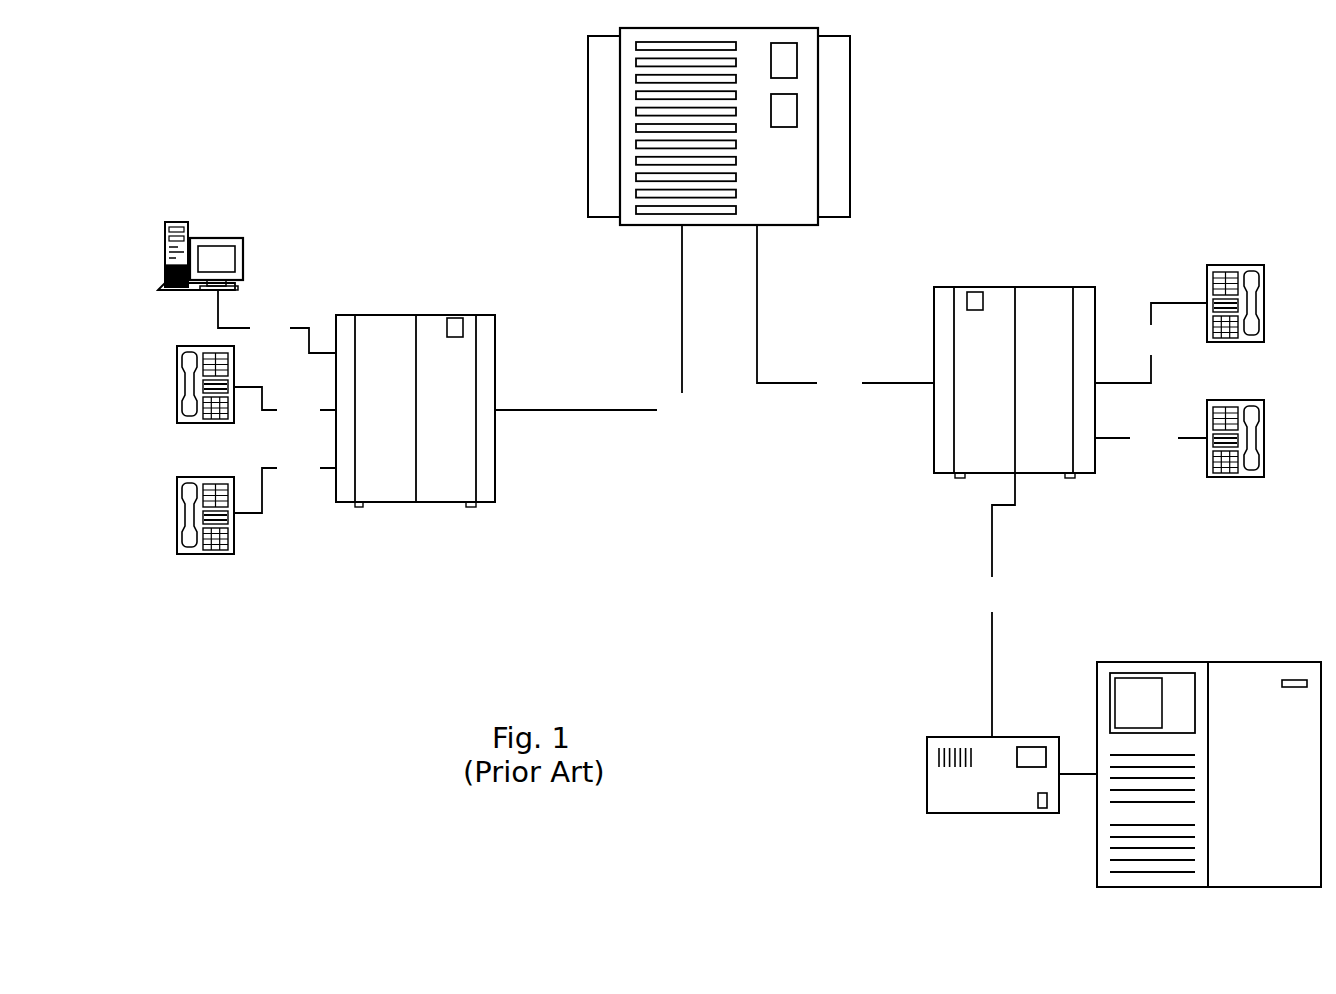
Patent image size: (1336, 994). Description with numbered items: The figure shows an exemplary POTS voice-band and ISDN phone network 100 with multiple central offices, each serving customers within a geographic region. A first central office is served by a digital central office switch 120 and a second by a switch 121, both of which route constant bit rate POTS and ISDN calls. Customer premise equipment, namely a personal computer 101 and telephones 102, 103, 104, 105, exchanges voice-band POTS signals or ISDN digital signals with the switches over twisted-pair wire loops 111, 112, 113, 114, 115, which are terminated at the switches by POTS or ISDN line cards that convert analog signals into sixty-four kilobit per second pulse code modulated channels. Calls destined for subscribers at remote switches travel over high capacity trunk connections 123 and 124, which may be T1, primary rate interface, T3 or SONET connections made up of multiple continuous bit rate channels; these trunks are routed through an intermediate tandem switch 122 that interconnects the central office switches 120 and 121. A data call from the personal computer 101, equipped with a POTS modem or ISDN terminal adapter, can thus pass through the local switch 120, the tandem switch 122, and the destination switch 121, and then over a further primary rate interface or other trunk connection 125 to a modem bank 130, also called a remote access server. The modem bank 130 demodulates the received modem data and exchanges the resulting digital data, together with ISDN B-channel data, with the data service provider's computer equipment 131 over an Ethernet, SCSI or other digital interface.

The phone network 100 is at (268, 79).
The personal computer 101 is at (167, 258).
The customer premise equipment 102 is at (178, 385).
The customer premise equipment 103 is at (178, 515).
The customer premise equipment 104 is at (1264, 300).
The customer premise equipment 105 is at (1264, 437).
The twisted-pair wire loop 111 is at (277, 321).
The twisted-pair wire loop 112 is at (284, 405).
The twisted-pair wire loop 113 is at (284, 484).
The twisted-pair wire loop 114 is at (1151, 343).
The twisted-pair wire loop 115 is at (1151, 438).
The central office switch 120 is at (416, 315).
The central office switch 121 is at (1015, 287).
The tandem switch 122 is at (850, 125).
The trunk connection 123 is at (599, 324).
The trunk connection 124 is at (845, 310).
The trunk connection 125 is at (995, 605).
The modem bank 130 is at (927, 772).
The computer equipment 131 is at (1208, 662).